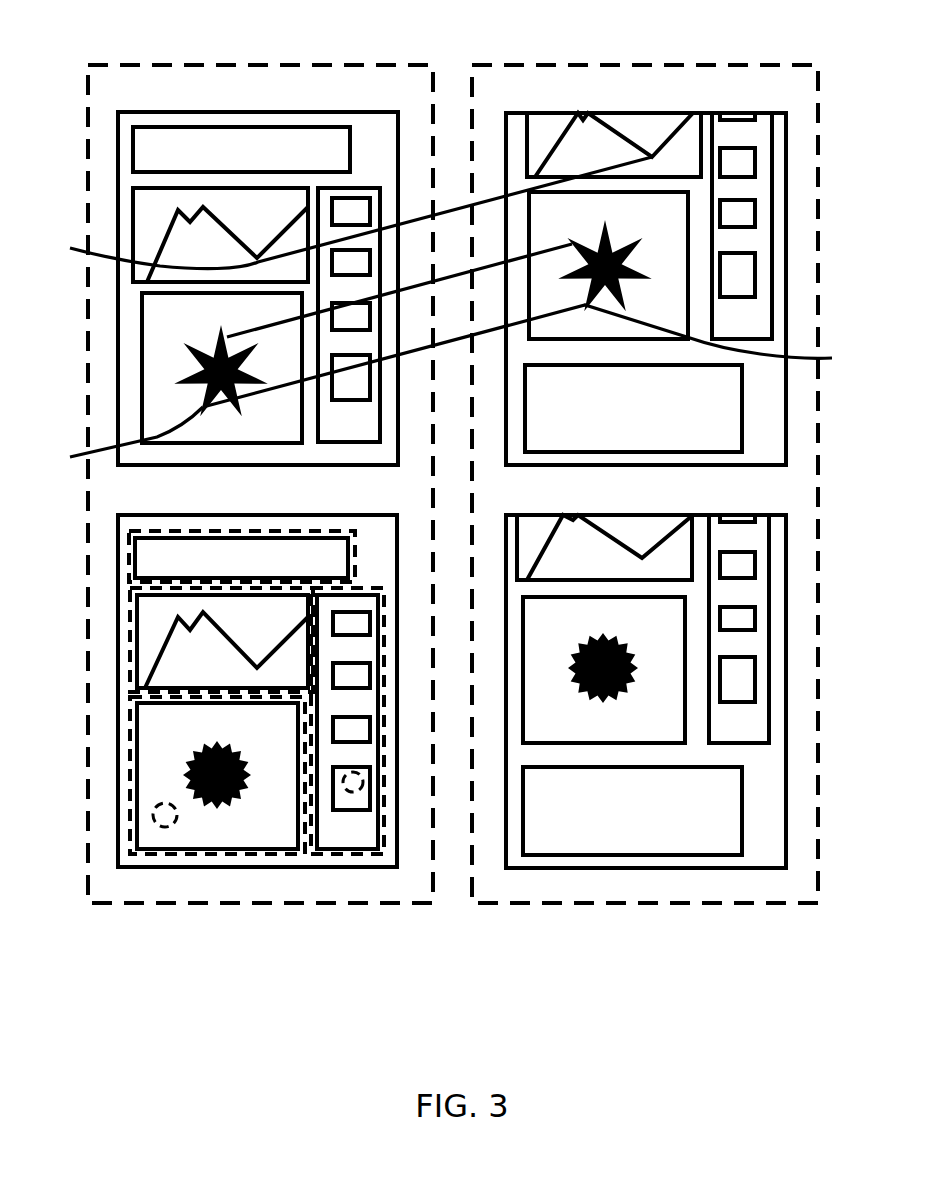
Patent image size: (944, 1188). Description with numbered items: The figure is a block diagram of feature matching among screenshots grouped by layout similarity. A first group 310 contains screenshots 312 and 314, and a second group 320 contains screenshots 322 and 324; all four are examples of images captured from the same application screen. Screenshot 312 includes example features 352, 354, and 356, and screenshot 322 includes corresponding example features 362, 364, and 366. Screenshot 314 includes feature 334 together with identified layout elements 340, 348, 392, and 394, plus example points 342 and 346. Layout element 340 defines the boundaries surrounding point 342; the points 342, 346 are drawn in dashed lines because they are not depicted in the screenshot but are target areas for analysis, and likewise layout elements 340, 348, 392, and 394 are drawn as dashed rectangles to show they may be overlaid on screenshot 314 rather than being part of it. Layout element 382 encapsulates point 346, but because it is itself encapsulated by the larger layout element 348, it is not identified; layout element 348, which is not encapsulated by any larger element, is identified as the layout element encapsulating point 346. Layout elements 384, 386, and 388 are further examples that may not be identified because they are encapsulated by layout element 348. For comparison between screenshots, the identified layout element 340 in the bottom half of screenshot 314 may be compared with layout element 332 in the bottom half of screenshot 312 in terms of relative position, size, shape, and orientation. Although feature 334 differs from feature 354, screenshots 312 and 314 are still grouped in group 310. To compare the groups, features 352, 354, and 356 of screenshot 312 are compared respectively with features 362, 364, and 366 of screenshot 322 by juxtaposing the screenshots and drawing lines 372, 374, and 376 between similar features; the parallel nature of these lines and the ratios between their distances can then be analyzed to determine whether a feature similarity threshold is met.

The first group 310 is at (258, 65).
The screenshot 312 is at (118, 217).
The screenshot 314 is at (118, 610).
The second group 320 is at (643, 65).
The screenshot 322 is at (786, 183).
The screenshot 324 is at (786, 607).
The layout element 332 is at (142, 355).
The feature 334 is at (232, 750).
The layout element 340 is at (280, 854).
The point 342 is at (145, 823).
The point 346 is at (357, 792).
The layout element 348 is at (385, 854).
The feature 352 is at (120, 439).
The feature 354 is at (228, 345).
The feature 356 is at (176, 244).
The feature 362 is at (727, 337).
The feature 364 is at (615, 242).
The feature 366 is at (652, 157).
The line 372 is at (455, 209).
The line 374 is at (447, 277).
The line 376 is at (448, 345).
The layout element 382 is at (370, 793).
The layout element 384 is at (370, 730).
The layout element 386 is at (370, 675).
The layout element 388 is at (370, 619).
The layout element 392 is at (130, 660).
The layout element 394 is at (130, 560).